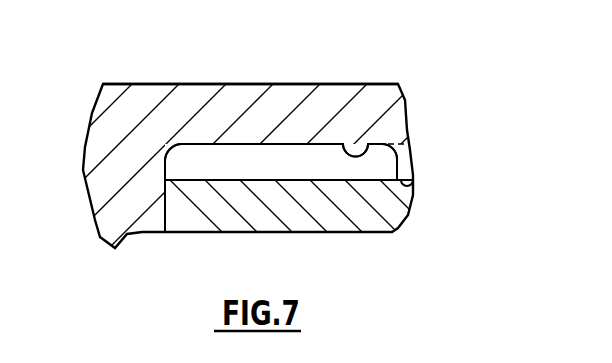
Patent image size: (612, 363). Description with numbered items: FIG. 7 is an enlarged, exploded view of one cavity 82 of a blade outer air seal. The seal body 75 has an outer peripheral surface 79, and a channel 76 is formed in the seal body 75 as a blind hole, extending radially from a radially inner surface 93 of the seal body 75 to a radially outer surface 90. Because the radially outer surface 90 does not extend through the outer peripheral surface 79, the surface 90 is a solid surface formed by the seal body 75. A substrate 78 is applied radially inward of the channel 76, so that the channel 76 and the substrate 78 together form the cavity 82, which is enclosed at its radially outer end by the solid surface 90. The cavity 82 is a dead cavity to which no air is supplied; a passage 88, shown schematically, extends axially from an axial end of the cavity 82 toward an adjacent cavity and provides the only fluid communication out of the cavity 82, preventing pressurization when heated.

The seal body 75 is at (150, 97).
The channel 76 is at (250, 144).
The substrate 78 is at (332, 218).
The outer peripheral surface 79 is at (301, 84).
The cavity 82 is at (289, 174).
The passage 88 is at (404, 161).
The radially outer surface 90 is at (368, 150).
The radially inner surface 93 is at (413, 189).